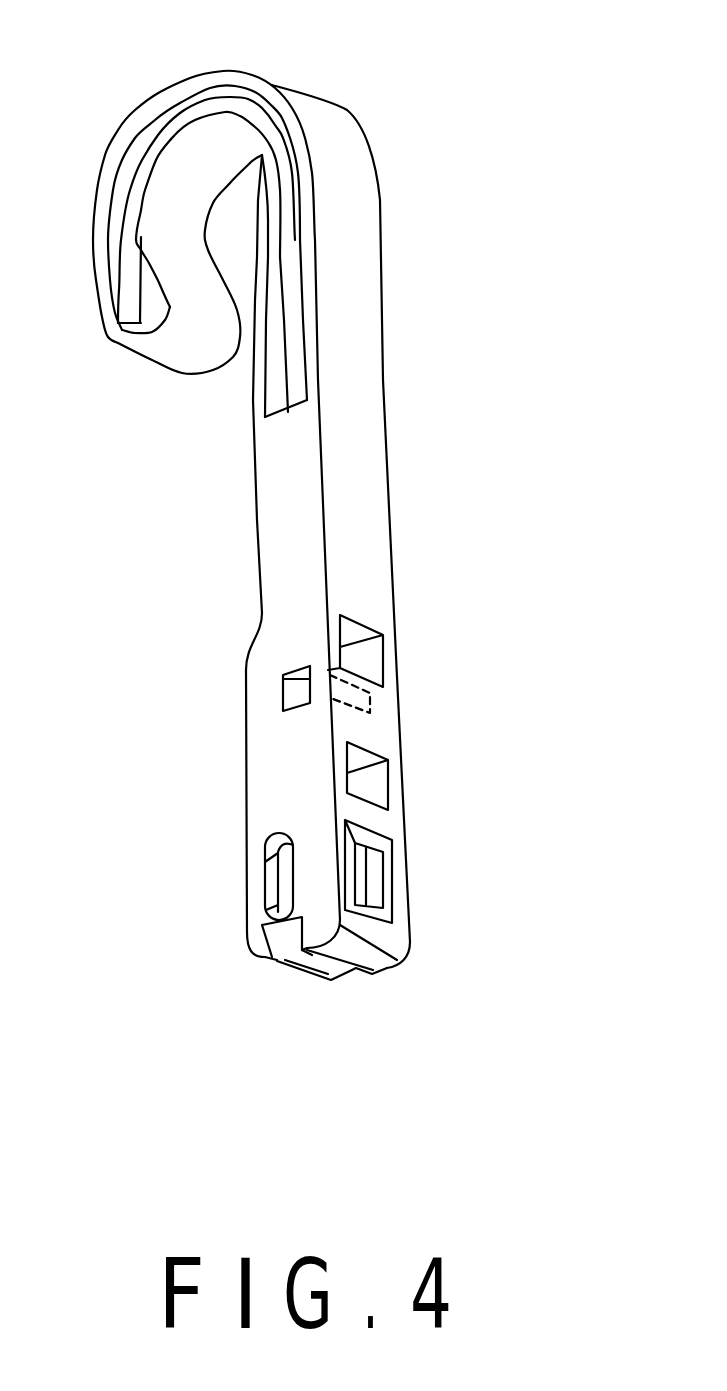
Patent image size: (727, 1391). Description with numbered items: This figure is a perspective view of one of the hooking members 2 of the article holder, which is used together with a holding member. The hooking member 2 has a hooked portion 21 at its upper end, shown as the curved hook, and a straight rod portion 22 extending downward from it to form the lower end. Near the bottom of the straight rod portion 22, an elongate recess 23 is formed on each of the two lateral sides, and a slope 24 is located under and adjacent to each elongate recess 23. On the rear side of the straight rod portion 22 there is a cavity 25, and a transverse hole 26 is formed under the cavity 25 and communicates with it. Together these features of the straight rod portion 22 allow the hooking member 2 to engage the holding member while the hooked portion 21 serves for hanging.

The hooking member 2 is at (412, 300).
The hooked portion 21 is at (142, 108).
The straight rod portion 22 is at (403, 522).
The elongate recess 23 is at (279, 879).
The slope 24 is at (287, 941).
The cavity 25 is at (375, 650).
The transverse hole 26 is at (277, 699).